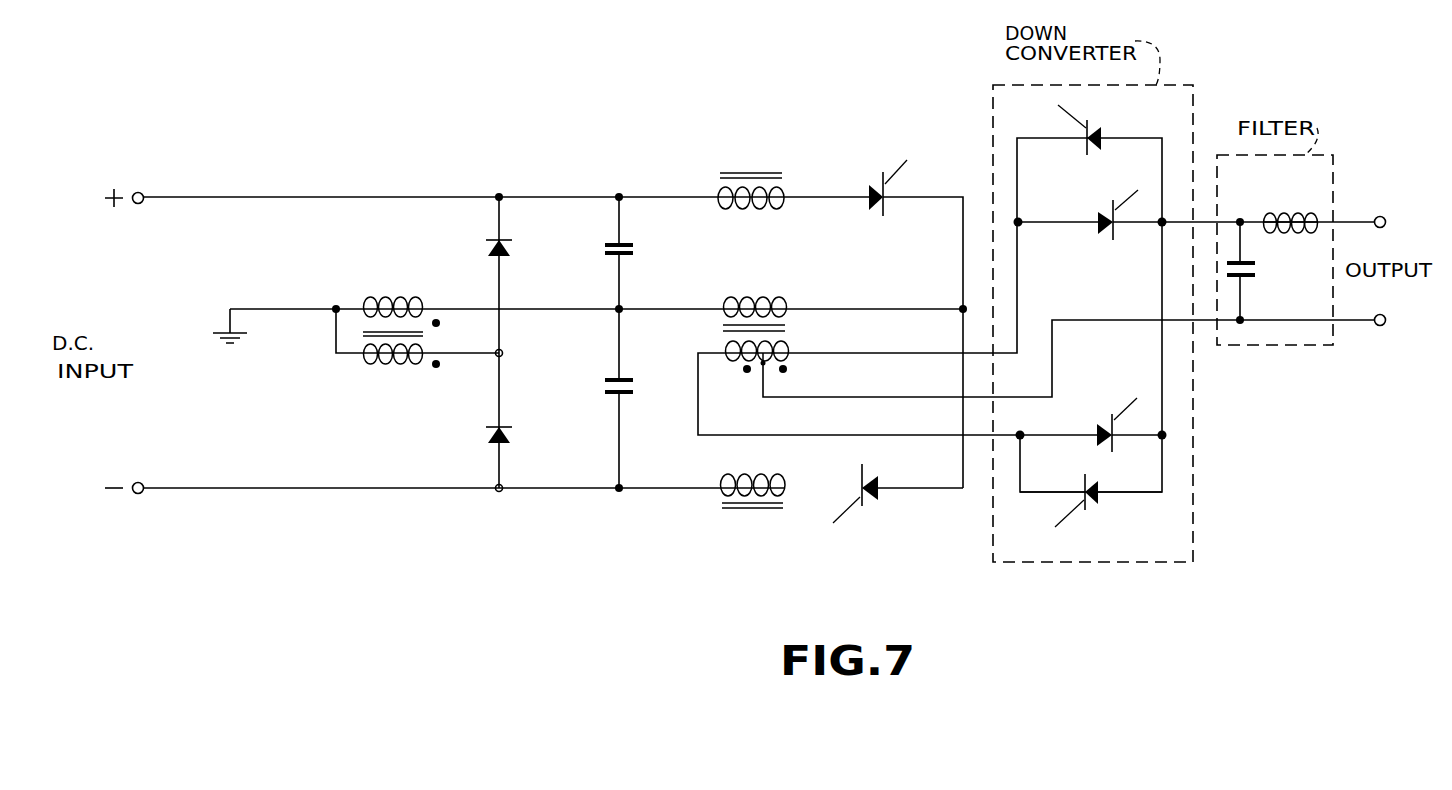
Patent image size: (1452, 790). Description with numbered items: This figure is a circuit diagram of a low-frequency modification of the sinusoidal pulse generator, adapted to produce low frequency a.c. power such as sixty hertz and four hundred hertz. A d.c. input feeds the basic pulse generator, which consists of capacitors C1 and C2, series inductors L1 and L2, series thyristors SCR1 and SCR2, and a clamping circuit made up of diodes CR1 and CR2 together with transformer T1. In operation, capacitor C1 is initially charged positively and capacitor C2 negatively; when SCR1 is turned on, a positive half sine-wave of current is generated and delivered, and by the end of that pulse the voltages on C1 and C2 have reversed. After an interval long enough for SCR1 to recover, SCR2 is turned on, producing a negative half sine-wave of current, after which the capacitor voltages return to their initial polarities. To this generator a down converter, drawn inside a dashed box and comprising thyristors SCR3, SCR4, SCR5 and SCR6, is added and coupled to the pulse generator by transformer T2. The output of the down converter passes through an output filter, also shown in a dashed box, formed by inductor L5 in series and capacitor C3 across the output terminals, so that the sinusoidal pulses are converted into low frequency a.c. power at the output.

The diode CR1 is at (506, 256).
The diode CR2 is at (504, 441).
The capacitor C1 is at (630, 258).
The capacitor C2 is at (630, 396).
The filter capacitor C3 is at (1252, 278).
The transformer T1 is at (405, 300).
The transformer T2 is at (763, 295).
The series inductor L1 is at (763, 167).
The series inductor L2 is at (765, 511).
The filter inductor L5 is at (1292, 212).
The series thyristor SCR1 is at (878, 190).
The series thyristor SCR2 is at (868, 496).
The down converter thyristor SCR3 is at (1100, 134).
The down converter thyristor SCR4 is at (1102, 214).
The down converter thyristor SCR5 is at (1100, 428).
The down converter thyristor SCR6 is at (1091, 505).